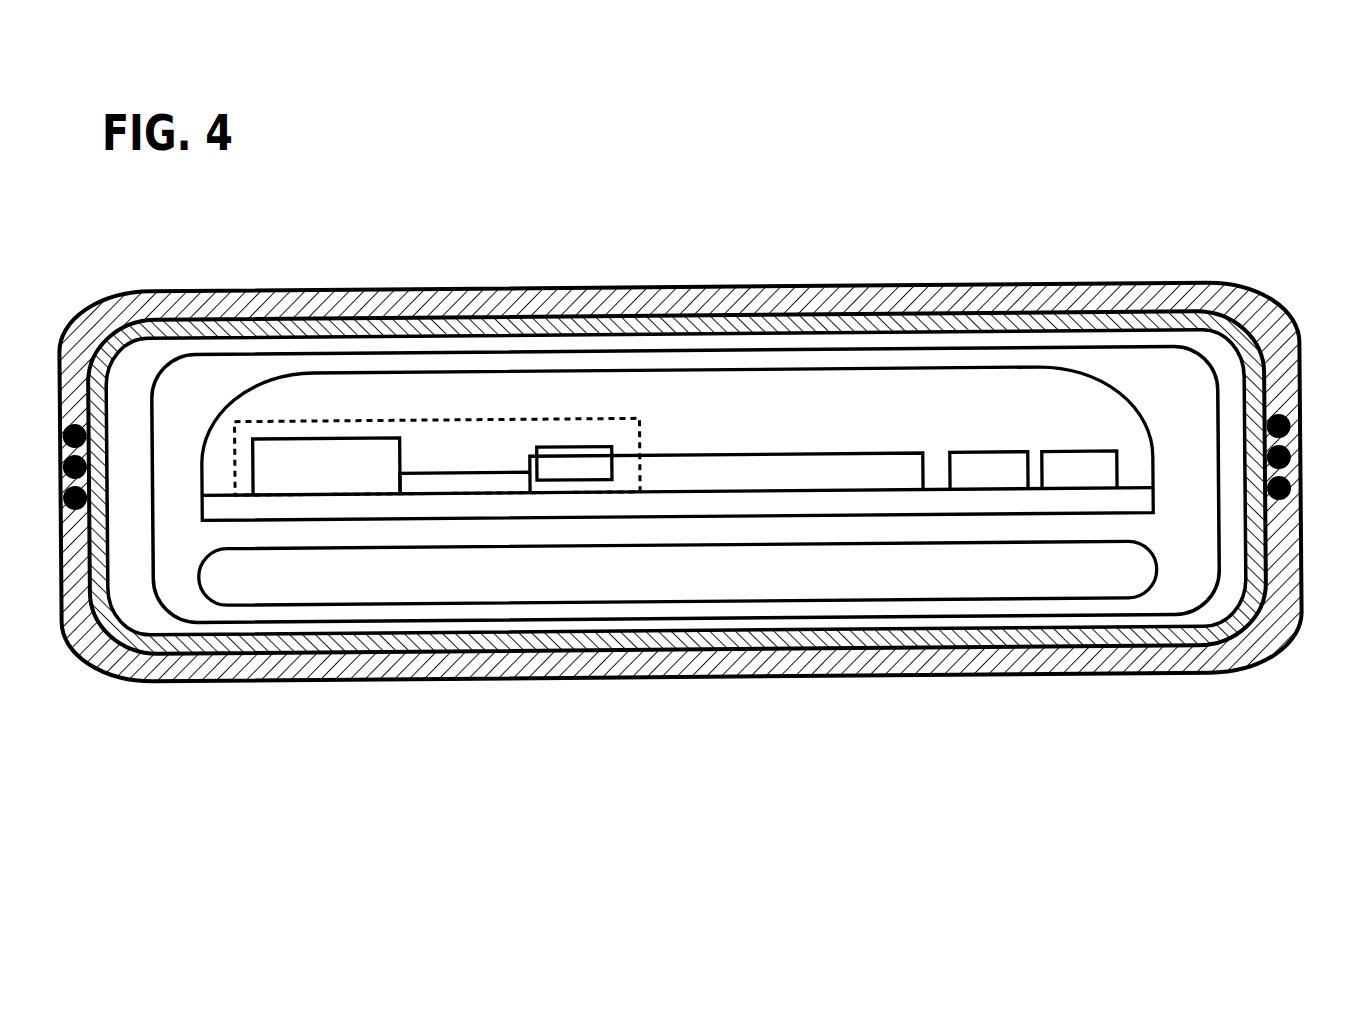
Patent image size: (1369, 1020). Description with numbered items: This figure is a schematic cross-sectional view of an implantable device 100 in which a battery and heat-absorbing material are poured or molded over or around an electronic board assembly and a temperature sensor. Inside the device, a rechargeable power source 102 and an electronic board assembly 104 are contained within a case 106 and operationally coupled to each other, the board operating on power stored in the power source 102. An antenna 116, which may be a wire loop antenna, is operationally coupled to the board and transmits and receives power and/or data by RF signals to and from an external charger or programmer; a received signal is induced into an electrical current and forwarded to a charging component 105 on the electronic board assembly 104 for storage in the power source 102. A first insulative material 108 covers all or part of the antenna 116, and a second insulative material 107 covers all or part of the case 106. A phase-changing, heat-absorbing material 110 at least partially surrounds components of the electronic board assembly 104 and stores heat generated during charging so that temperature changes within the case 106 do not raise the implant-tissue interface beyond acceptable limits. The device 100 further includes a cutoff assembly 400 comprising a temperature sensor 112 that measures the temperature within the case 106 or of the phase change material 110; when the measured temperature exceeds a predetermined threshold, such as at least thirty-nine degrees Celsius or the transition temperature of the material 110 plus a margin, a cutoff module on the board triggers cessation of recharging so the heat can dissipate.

The implantable device 100 is at (509, 269).
The power source 102 is at (678, 647).
The electronic board assembly 104 is at (831, 436).
The charging component 105 is at (643, 334).
The case 106 is at (677, 534).
The second insulative material 107 is at (1178, 357).
The first insulative material 108 is at (680, 521).
The phase-changing, heat-absorbing material 110 is at (677, 372).
The temperature sensor 112 is at (246, 352).
The antenna 116 is at (710, 384).
The cutoff assembly 400 is at (431, 399).